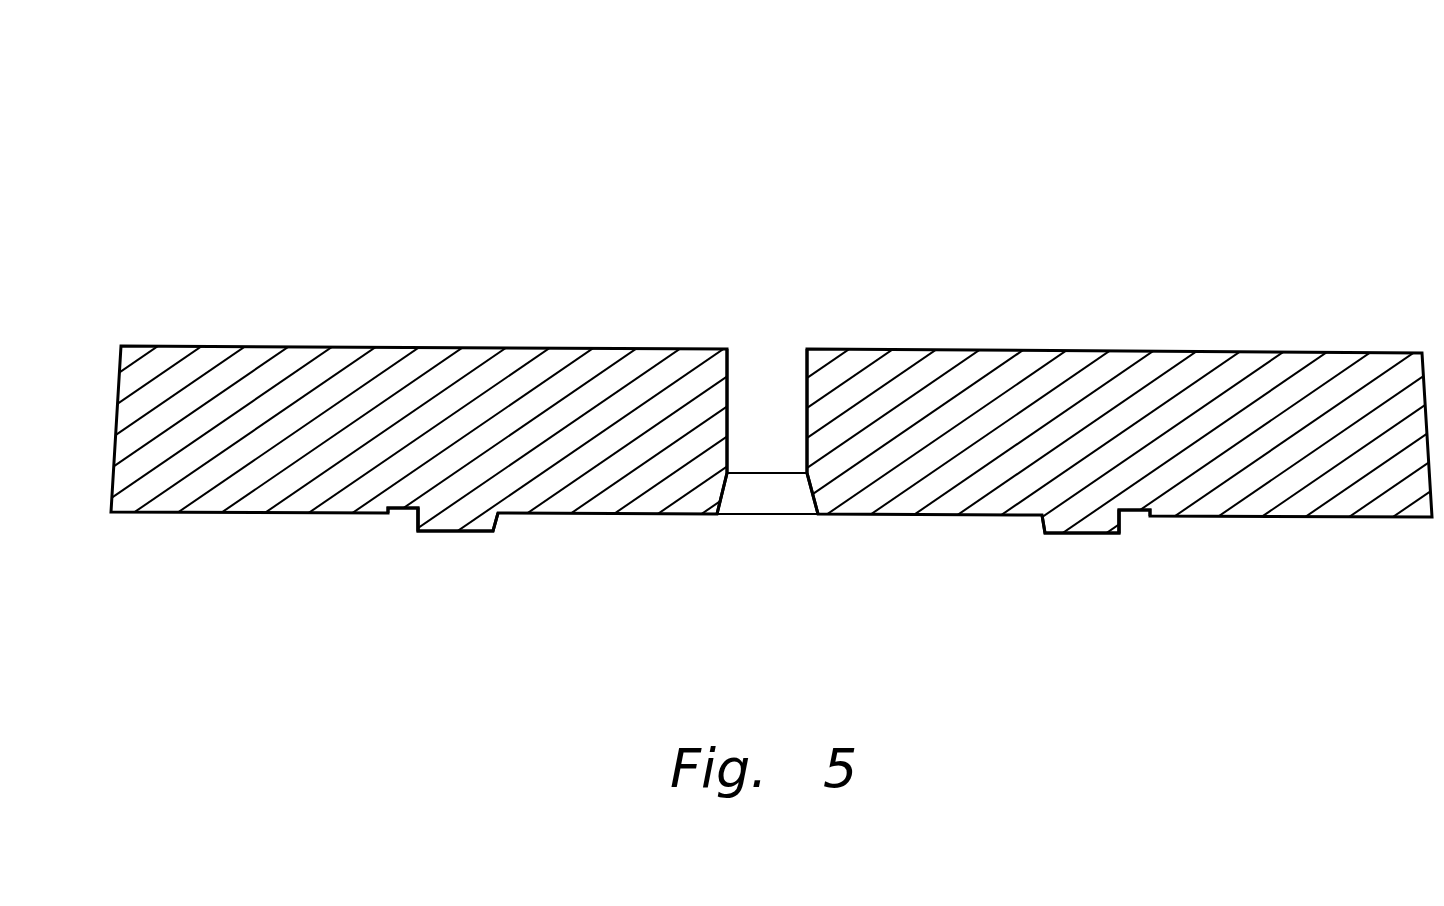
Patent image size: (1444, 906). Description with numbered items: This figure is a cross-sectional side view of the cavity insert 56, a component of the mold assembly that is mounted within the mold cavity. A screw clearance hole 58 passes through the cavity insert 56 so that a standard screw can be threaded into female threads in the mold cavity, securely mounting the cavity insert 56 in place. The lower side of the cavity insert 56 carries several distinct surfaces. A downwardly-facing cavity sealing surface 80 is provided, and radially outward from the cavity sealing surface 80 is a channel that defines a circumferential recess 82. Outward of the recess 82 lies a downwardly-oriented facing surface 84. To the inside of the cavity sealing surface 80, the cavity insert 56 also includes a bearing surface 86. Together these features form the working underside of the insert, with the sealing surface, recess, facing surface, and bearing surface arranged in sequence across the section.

The cavity insert 56 is at (628, 249).
The screw clearance hole 58 is at (796, 361).
The cavity sealing surface 80 is at (1079, 557).
The circumferential recess 82 is at (1136, 546).
The facing surface 84 is at (245, 538).
The bearing surface 86 is at (601, 538).